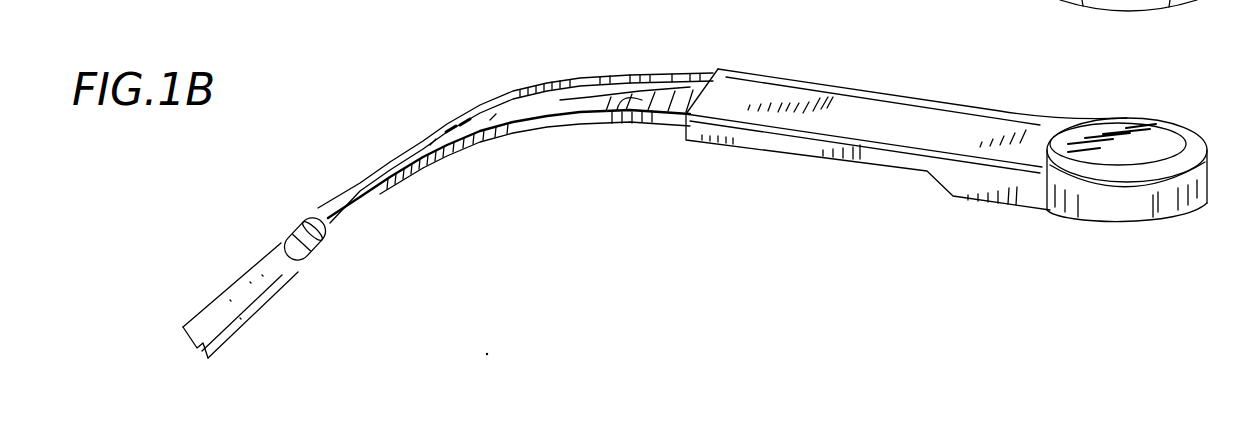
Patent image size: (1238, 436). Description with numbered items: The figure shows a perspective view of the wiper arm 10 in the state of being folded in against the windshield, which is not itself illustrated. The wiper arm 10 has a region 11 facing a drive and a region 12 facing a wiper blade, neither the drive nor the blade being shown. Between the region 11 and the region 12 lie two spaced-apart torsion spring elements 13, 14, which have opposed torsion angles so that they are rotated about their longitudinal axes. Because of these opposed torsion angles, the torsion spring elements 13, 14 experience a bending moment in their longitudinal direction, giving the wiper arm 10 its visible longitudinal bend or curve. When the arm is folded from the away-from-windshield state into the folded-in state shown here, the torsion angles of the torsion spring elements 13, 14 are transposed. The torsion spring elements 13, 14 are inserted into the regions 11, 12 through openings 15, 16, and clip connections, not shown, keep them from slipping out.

The wiper arm 10 is at (428, 74).
The region facing a drive 11 is at (877, 115).
The region facing a wiper blade 12 is at (230, 292).
The torsion spring element 13 is at (644, 80).
The torsion spring element 14 is at (617, 110).
The opening 15 is at (312, 258).
The opening 16 is at (305, 209).